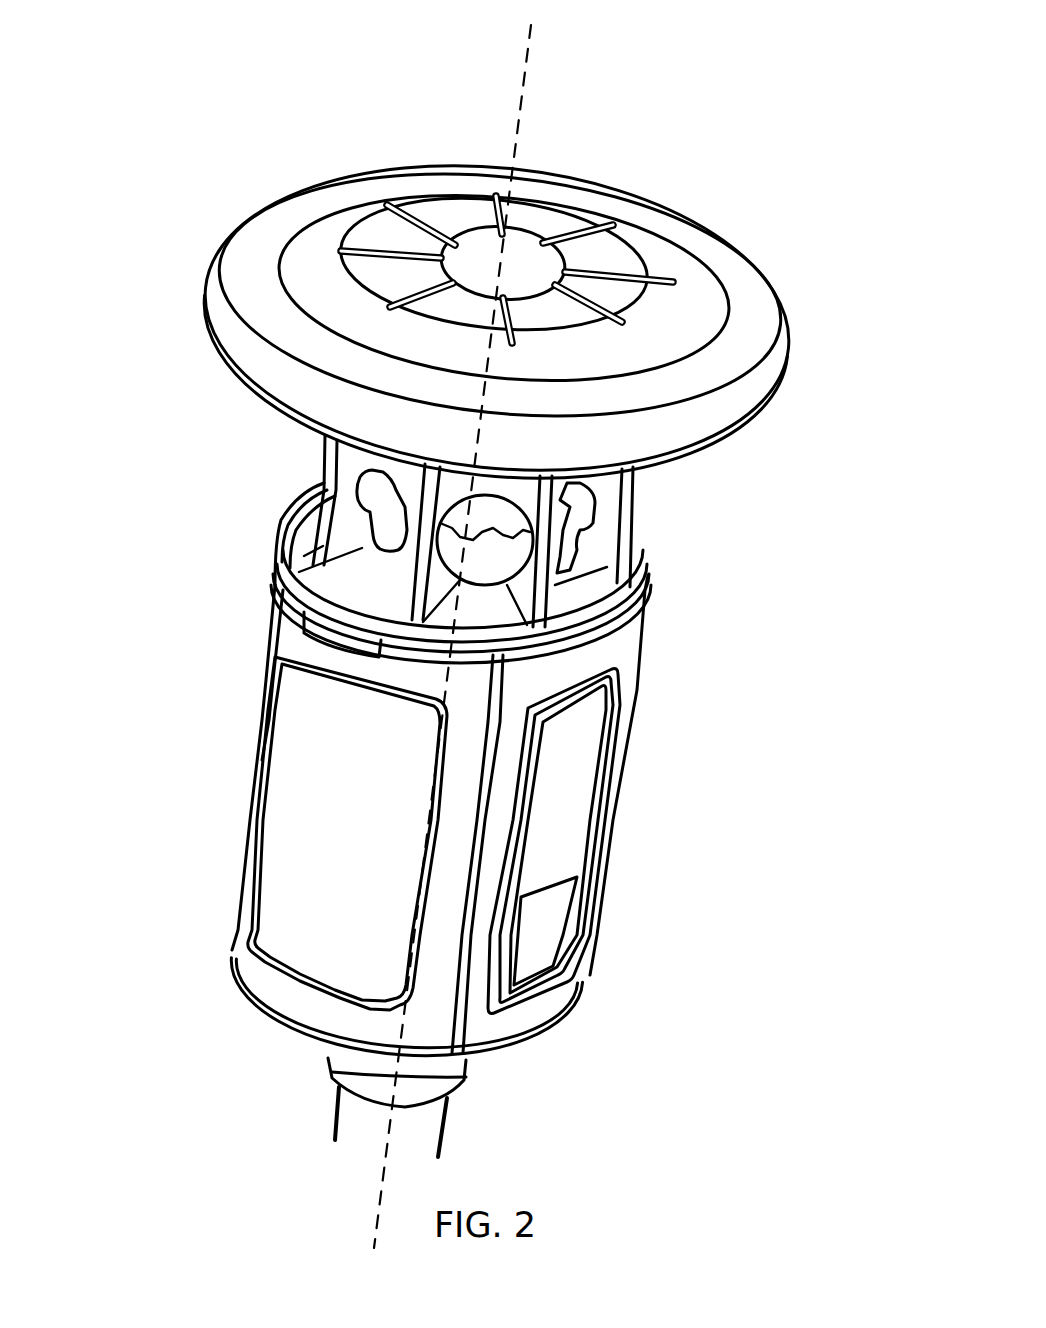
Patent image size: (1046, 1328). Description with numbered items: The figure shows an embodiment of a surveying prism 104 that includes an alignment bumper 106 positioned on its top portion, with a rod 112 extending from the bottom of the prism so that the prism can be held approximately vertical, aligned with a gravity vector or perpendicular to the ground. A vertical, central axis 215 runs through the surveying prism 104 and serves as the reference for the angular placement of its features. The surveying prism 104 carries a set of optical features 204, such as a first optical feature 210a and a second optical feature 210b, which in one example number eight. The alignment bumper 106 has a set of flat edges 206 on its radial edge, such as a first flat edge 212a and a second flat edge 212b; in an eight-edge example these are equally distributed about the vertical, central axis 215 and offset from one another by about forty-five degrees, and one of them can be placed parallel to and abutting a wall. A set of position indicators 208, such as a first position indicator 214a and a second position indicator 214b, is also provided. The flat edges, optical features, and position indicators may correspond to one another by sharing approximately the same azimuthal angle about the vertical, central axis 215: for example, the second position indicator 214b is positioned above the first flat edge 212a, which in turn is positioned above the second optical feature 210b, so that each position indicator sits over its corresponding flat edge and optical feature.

The surveying prism 104 is at (146, 104).
The alignment bumper 106 is at (318, 272).
The rod 112 is at (360, 1127).
The set of optical features 204 is at (236, 513).
The set of flat edges 206 is at (205, 357).
The set of position indicators 208 is at (635, 273).
The first optical feature 210a is at (365, 517).
The second optical feature 210b is at (503, 532).
The first flat edge 212a is at (515, 440).
The second flat edge 212b is at (765, 300).
The first position indicator 214a is at (510, 215).
The second position indicator 214b is at (527, 335).
The vertical, central axis 215 is at (520, 70).